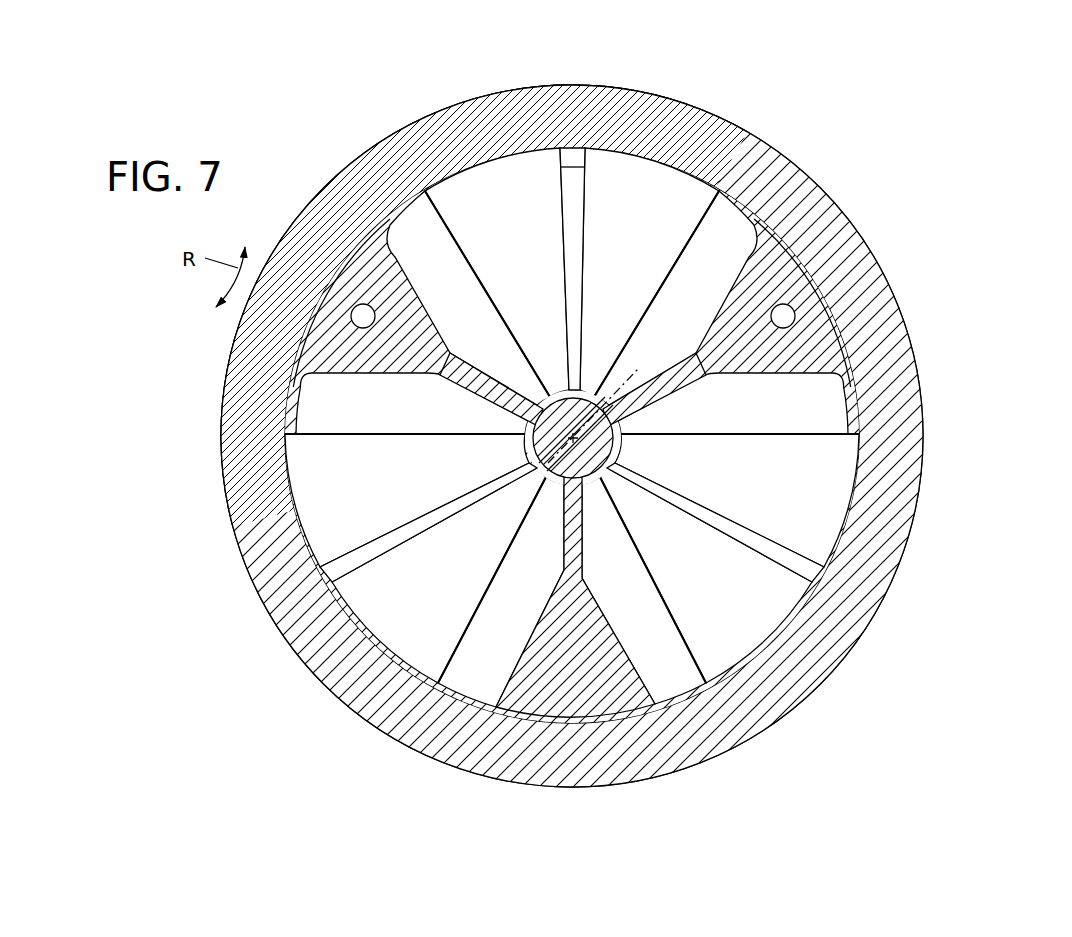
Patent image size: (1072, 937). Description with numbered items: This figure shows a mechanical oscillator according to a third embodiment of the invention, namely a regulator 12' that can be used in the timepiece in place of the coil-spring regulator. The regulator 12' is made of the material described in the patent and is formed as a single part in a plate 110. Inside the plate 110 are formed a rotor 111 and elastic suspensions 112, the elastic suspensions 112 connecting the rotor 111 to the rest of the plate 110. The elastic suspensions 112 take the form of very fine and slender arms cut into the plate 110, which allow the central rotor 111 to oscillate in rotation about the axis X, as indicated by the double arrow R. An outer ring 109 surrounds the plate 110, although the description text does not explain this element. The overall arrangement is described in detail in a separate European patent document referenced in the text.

The regulator 12' is at (634, 422).
The outer ring 109 is at (864, 214).
The plate 110 is at (883, 290).
The rotor 111 is at (613, 712).
The elastic suspensions 112 is at (546, 154).